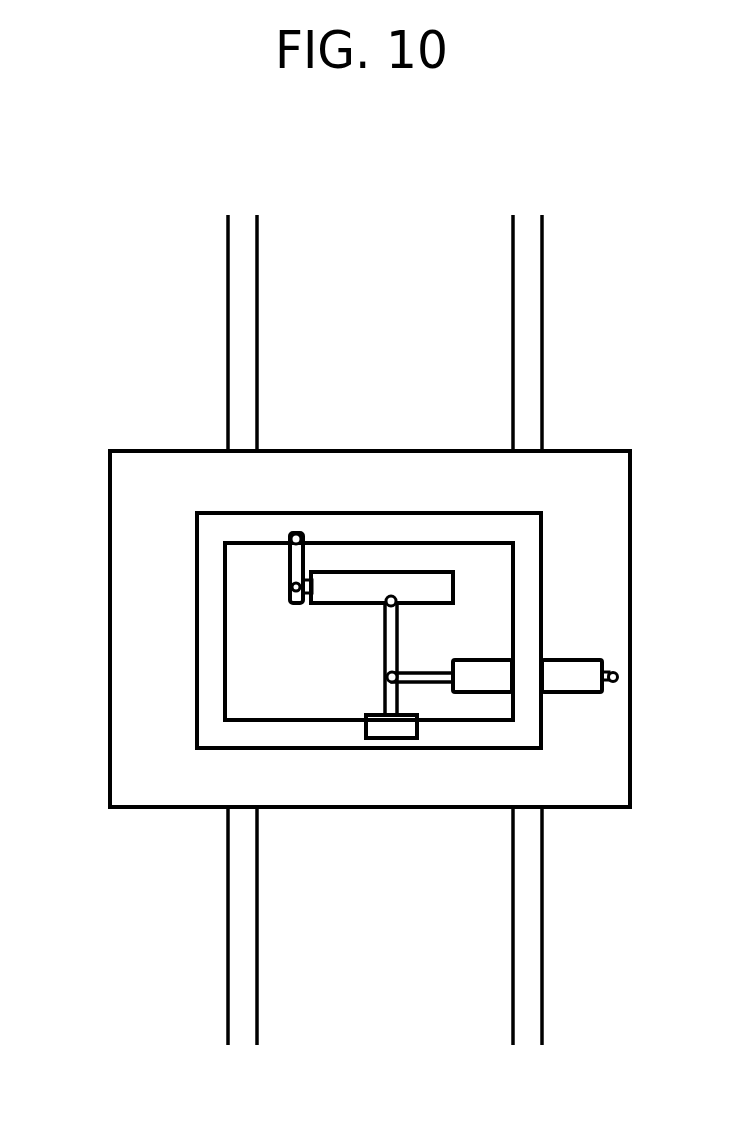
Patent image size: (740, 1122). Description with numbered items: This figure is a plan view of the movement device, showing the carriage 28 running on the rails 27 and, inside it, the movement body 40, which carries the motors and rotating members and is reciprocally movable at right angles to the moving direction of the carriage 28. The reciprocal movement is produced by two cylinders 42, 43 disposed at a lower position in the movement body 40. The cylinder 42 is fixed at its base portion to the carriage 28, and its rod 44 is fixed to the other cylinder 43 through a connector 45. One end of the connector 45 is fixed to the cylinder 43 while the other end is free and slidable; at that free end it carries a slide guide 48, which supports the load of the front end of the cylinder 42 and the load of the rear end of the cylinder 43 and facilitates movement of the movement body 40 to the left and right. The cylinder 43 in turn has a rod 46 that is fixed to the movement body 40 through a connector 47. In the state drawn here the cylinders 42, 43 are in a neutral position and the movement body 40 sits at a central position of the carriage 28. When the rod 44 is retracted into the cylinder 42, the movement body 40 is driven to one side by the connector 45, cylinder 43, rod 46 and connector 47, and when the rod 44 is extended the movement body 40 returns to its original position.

The rails 27 is at (228, 320).
The carriage 28 is at (630, 564).
The movement body 40 is at (462, 527).
The cylinder 42 is at (580, 694).
The cylinder 43 is at (390, 570).
The rod 44 is at (437, 683).
The connector 45 is at (385, 653).
The rod 46 is at (303, 577).
The connector 47 is at (290, 575).
The slide guide 48 is at (393, 730).